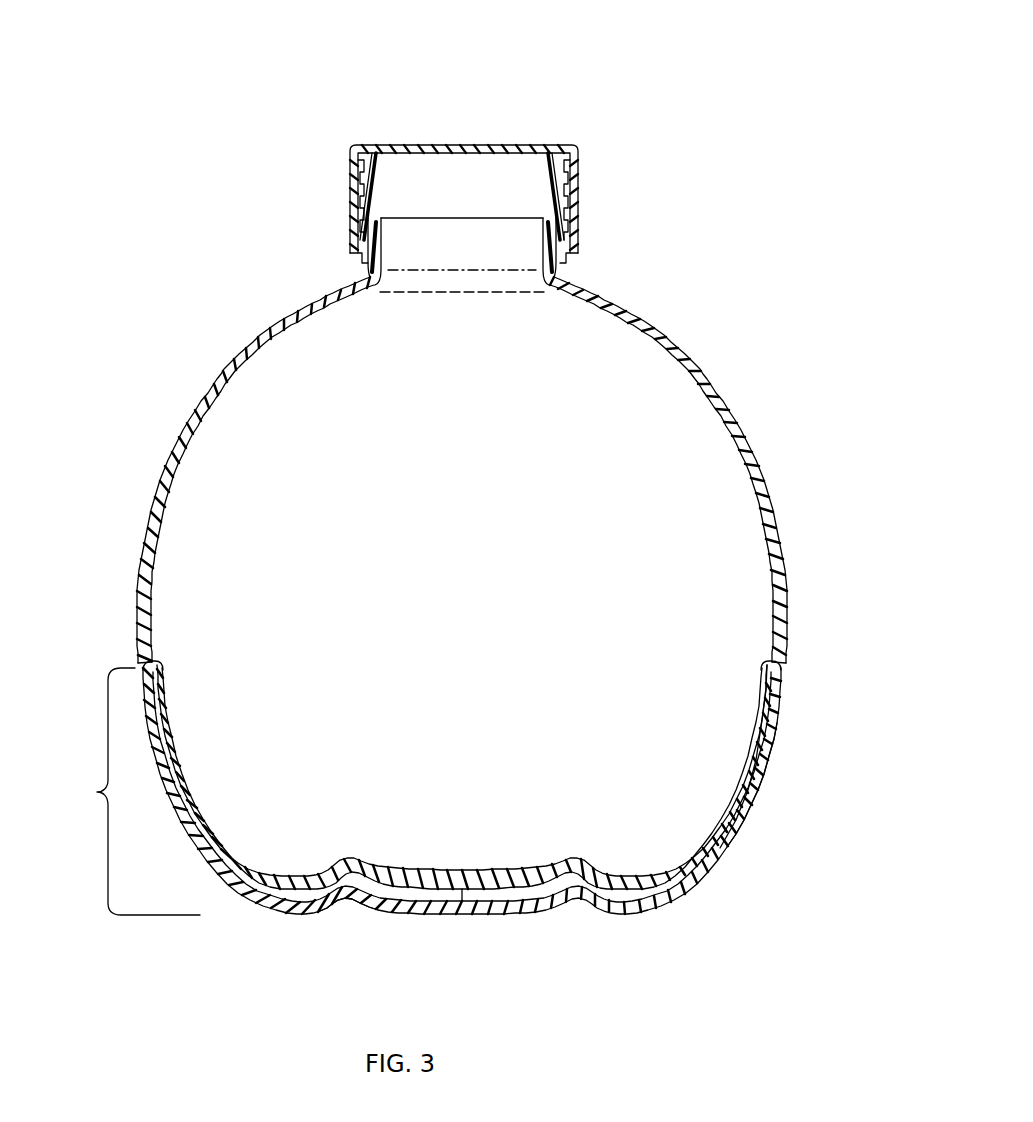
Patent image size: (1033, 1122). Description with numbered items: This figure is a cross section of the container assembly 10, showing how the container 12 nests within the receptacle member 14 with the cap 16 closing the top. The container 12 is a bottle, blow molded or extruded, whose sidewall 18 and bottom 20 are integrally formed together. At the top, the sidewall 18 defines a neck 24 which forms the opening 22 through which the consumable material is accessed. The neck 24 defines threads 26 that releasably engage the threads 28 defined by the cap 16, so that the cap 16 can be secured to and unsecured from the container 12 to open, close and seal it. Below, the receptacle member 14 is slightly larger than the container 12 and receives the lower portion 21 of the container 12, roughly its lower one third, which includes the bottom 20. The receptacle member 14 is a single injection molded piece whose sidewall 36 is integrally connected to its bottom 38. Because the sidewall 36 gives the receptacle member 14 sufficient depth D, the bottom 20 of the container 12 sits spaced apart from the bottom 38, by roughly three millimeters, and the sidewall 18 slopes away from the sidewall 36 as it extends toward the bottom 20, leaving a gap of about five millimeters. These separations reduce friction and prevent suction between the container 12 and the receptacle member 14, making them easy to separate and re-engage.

The container assembly 10 is at (576, 78).
The container 12 is at (702, 344).
The receptacle member 14 is at (493, 913).
The cap 16 is at (572, 146).
The sidewall 18 is at (157, 480).
The bottom 20 is at (527, 888).
The lower portion 21 is at (736, 740).
The opening 22 is at (452, 292).
The neck 24 is at (547, 273).
The threads 26 is at (353, 176).
The threads 28 is at (372, 188).
The sidewall 36 is at (766, 790).
The bottom 38 is at (372, 893).
The depth D is at (97, 792).